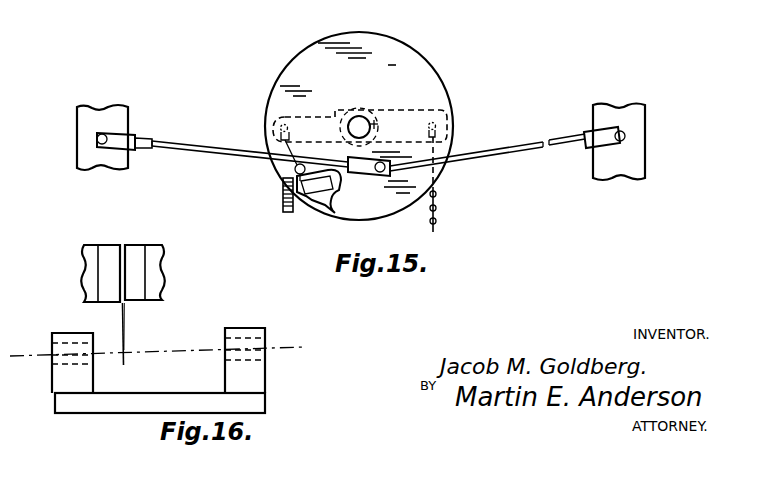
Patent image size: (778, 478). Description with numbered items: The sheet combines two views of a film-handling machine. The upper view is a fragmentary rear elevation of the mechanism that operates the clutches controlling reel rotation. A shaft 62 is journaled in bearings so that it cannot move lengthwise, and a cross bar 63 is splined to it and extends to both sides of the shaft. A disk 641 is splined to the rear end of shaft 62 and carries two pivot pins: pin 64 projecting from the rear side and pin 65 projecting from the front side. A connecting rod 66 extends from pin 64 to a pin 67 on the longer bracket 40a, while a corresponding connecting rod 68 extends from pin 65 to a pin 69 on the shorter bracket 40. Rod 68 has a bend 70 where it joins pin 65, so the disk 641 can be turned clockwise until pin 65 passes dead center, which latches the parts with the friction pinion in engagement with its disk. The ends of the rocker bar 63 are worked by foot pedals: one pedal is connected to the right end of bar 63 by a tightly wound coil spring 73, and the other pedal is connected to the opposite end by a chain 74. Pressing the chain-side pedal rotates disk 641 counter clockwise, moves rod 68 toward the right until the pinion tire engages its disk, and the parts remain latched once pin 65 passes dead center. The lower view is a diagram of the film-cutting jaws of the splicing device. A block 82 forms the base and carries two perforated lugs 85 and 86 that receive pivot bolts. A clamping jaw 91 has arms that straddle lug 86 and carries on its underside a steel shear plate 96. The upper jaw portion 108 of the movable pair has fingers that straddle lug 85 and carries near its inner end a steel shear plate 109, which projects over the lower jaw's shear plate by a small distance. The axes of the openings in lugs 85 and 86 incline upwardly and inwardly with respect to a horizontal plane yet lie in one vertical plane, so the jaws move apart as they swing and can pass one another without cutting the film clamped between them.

In FIG. 15, the bracket 40 is at (641, 113).
In FIG. 15, the bracket 40a is at (77, 126).
In FIG. 15, the shaft 62 is at (360, 122).
In FIG. 15, the cross bar 63 is at (411, 116).
In FIG. 15, the pivot pin 64 is at (382, 168).
In FIG. 15, the disk 641 is at (359, 126).
In FIG. 15, the pivot pin 65 is at (294, 172).
In FIG. 15, the connecting rod 66 is at (194, 149).
In FIG. 15, the pin 67 is at (98, 141).
In FIG. 15, the connecting rod 68 is at (517, 151).
In FIG. 15, the pin 69 is at (619, 143).
In FIG. 15, the bend 70 is at (311, 198).
In FIG. 15, the coil spring 73 is at (283, 209).
In FIG. 15, the chain 74 is at (437, 221).
In FIG. 16, the block 82 is at (163, 404).
In FIG. 16, the lug 85 is at (262, 374).
In FIG. 16, the lug 86 is at (66, 380).
In FIG. 16, the clamping jaw 91 is at (88, 266).
In FIG. 16, the shear plate 96 is at (108, 253).
In FIG. 16, the jaw portion 108 is at (160, 273).
In FIG. 16, the shear plate 109 is at (133, 253).